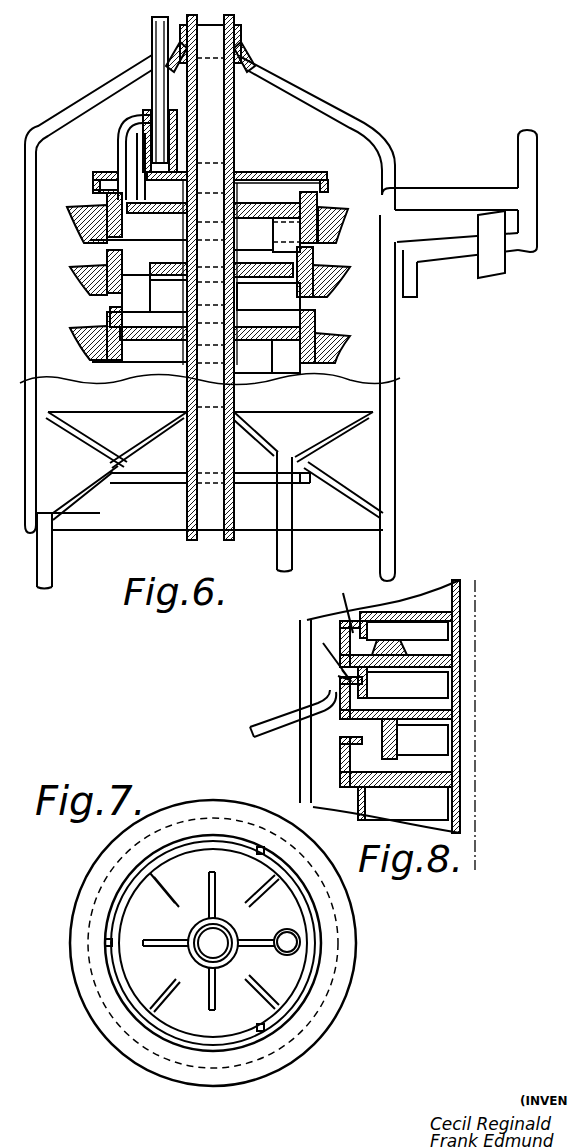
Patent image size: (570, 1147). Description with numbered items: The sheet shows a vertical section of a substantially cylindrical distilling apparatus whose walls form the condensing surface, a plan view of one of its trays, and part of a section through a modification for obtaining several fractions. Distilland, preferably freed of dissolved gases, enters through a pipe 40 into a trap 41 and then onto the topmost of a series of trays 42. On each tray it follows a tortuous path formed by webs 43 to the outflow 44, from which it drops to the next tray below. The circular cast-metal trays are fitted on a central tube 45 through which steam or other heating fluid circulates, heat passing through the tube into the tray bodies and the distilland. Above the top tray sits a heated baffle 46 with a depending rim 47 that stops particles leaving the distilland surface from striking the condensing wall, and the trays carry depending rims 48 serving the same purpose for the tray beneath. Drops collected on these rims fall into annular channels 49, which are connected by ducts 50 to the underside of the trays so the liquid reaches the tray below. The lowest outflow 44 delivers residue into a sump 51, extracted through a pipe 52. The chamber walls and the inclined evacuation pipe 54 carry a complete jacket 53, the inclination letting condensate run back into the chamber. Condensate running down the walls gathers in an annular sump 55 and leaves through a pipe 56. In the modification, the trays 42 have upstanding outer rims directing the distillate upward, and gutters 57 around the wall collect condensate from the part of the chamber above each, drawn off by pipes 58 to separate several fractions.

In FIG. 6, the pipe 40 is at (152, 24).
In FIG. 6, the trap 41 is at (150, 140).
In FIG. 7, the trap 41 is at (205, 927).
In FIG. 6, the trays 42 is at (105, 252).
In FIG. 8, the trays 42 is at (458, 697).
In FIG. 6, the webs 43 is at (272, 203).
In FIG. 7, the webs 43 is at (208, 880).
In FIG. 6, the outflow 44 is at (312, 236).
In FIG. 7, the outflow 44 is at (283, 935).
In FIG. 6, the central tube 45 is at (212, 36).
In FIG. 7, the central tube 45 is at (188, 953).
In FIG. 6, the baffle 46 is at (266, 180).
In FIG. 6, the depending rim 47 is at (330, 187).
In FIG. 6, the depending rims 48 is at (346, 213).
In FIG. 7, the depending rims 48 is at (96, 1002).
In FIG. 6, the annular channels 49 is at (100, 203).
In FIG. 6, the ducts 50 is at (100, 238).
In FIG. 6, the sump 51 is at (282, 450).
In FIG. 6, the pipe 52 is at (294, 552).
In FIG. 6, the jacket 53 is at (112, 282).
In FIG. 6, the pipe 54 is at (450, 192).
In FIG. 6, the annular sump 55 is at (210, 471).
In FIG. 6, the pipe 56 is at (52, 556).
In FIG. 8, the gutters 57 is at (312, 698).
In FIG. 8, the pipes 58 is at (262, 728).